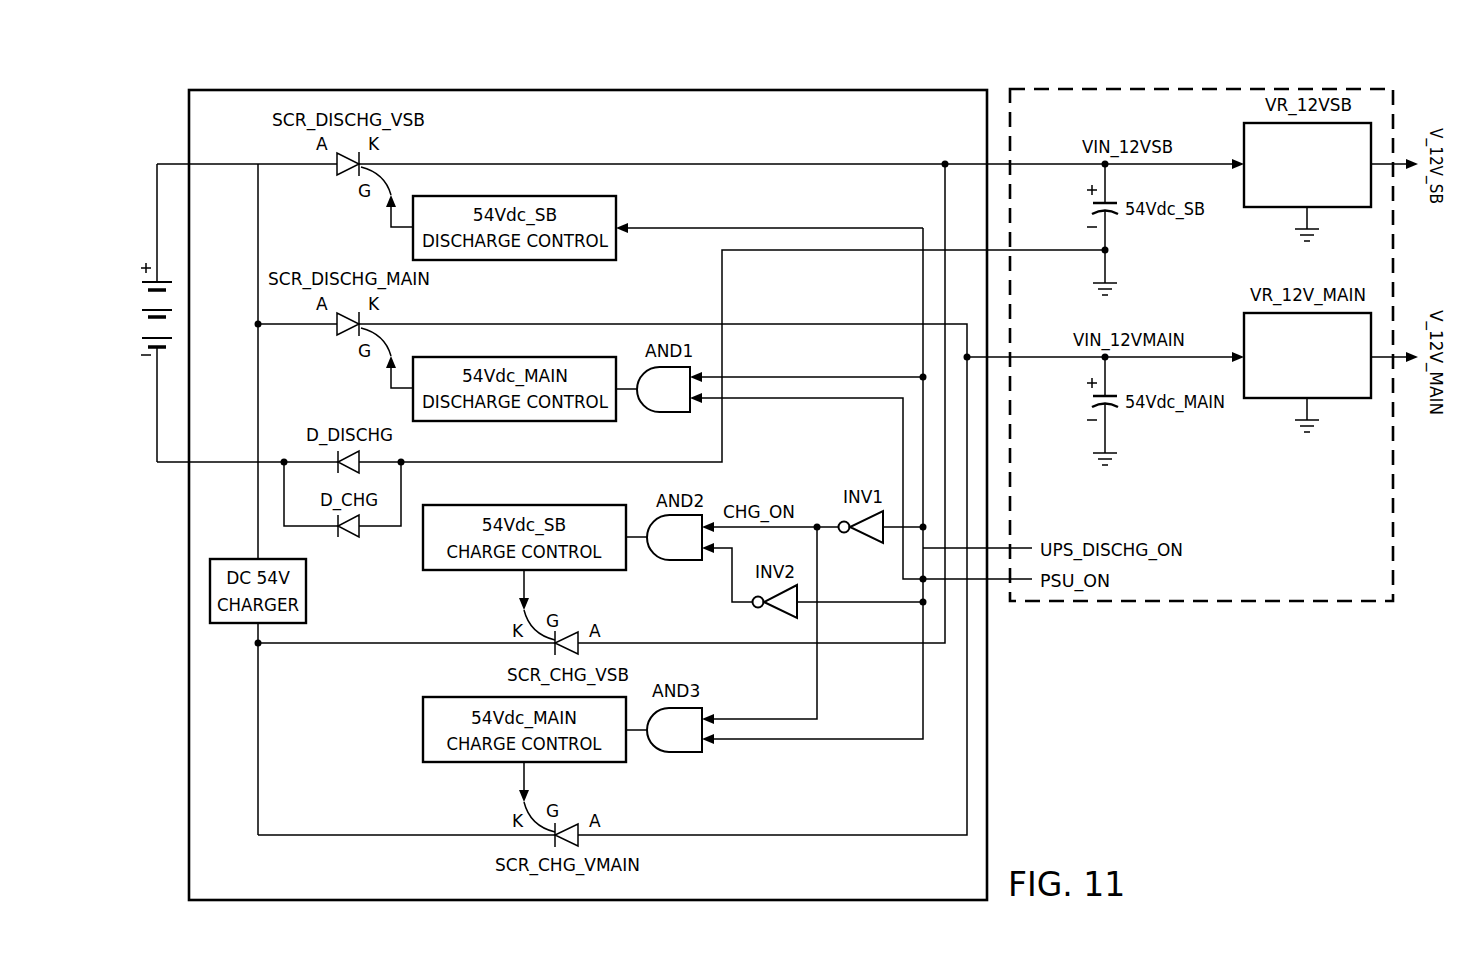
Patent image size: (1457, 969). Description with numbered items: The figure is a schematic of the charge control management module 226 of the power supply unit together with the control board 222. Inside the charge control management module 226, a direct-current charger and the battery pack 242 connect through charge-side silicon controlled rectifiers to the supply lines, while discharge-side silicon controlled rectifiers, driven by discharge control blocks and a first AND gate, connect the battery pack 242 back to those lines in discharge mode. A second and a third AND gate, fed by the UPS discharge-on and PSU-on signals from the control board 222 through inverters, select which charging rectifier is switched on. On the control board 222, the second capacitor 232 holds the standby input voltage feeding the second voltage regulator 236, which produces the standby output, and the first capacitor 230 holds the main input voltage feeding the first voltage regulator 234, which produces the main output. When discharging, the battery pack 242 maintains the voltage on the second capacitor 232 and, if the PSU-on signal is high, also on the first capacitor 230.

The control board 222 is at (1242, 85).
The charge control management module 226 is at (473, 85).
The first capacitor 230 is at (1094, 397).
The second capacitor 232 is at (1094, 204).
The first voltage regulator 234 is at (1348, 410).
The second voltage regulator 236 is at (1348, 218).
The battery pack 242 is at (152, 336).